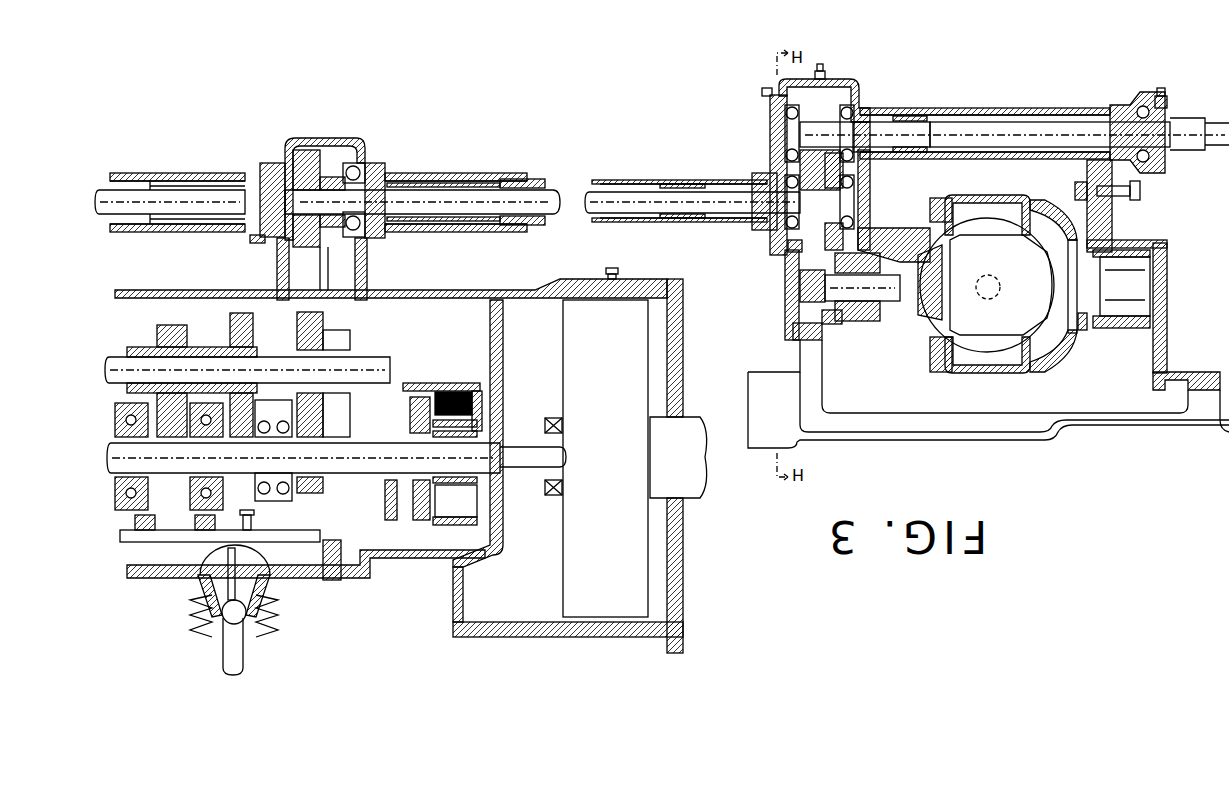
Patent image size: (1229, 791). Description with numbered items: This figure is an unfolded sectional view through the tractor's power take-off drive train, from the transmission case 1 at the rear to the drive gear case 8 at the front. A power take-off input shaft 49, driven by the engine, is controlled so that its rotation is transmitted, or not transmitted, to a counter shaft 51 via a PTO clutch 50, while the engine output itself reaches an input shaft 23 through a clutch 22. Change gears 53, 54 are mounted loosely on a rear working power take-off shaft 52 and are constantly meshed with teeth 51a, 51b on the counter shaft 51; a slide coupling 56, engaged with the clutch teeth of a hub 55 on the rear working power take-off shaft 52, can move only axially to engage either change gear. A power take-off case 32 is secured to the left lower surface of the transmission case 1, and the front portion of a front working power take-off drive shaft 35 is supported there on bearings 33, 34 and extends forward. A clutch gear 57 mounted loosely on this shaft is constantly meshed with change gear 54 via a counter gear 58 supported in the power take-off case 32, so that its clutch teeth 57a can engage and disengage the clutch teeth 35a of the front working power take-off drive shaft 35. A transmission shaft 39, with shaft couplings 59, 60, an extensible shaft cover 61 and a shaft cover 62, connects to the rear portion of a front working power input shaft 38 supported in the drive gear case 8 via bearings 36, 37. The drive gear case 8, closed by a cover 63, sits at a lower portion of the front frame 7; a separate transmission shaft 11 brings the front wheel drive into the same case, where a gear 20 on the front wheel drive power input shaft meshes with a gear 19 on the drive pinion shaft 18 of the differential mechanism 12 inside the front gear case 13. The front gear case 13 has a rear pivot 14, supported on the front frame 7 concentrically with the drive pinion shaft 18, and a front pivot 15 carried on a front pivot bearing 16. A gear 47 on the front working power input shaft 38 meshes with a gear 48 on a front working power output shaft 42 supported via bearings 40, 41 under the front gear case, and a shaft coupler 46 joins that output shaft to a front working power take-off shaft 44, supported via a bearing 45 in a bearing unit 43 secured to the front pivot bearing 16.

The transmission case 1 is at (464, 297).
The front frame 7 is at (800, 349).
The drive gear case 8 is at (840, 78).
The transmission shaft 11 is at (190, 175).
The differential mechanism 12 is at (928, 335).
The front gear case 13 is at (995, 195).
The rear pivot 14 is at (878, 305).
The front pivot 15 is at (1120, 312).
The front pivot bearing 16 is at (1155, 350).
The drive pinion shaft 18 is at (863, 323).
The gear 19 is at (835, 326).
The gear 20 is at (798, 282).
The clutch 22 is at (566, 622).
The input shaft 23 is at (521, 482).
The power take-off case 32 is at (355, 163).
The bearing 33 is at (370, 160).
The bearing 34 is at (262, 165).
The front working power take-off drive shaft 35 is at (323, 185).
The clutch teeth 35a is at (250, 240).
The bearing 36 is at (845, 215).
The bearing 37 is at (760, 234).
The front working power input shaft 38 is at (741, 190).
The transmission shaft 39 is at (530, 183).
The bearing 40 is at (856, 108).
The bearing 41 is at (770, 110).
The front working power output shaft 42 is at (882, 120).
The bearing unit 43 is at (1132, 92).
The front working power take-off shaft 44 is at (1056, 120).
The bearing 45 is at (1158, 95).
The shaft coupler 46 is at (933, 115).
The gear 47 is at (788, 248).
The gear 48 is at (820, 70).
The power take-off input shaft 49 is at (545, 416).
The PTO clutch 50 is at (455, 560).
The counter shaft 51 is at (335, 474).
The teeth 51a is at (341, 552).
The teeth 51b is at (308, 494).
The rear working power take-off shaft 52 is at (137, 345).
The change gear 53 is at (388, 322).
The change gear 54 is at (362, 285).
The hub 55 is at (333, 345).
The slide coupling 56 is at (333, 400).
The clutch gear 57 is at (308, 150).
The clutch teeth 57a is at (285, 137).
The counter gear 58 is at (277, 262).
The shaft coupling 59 is at (690, 180).
The shaft coupling 60 is at (452, 188).
The extensible shaft cover 61 is at (626, 178).
The shaft cover 62 is at (970, 108).
The cover 63 is at (765, 92).